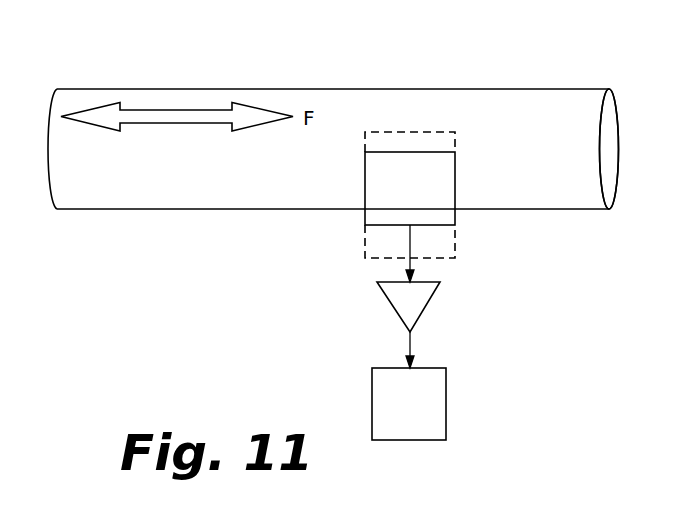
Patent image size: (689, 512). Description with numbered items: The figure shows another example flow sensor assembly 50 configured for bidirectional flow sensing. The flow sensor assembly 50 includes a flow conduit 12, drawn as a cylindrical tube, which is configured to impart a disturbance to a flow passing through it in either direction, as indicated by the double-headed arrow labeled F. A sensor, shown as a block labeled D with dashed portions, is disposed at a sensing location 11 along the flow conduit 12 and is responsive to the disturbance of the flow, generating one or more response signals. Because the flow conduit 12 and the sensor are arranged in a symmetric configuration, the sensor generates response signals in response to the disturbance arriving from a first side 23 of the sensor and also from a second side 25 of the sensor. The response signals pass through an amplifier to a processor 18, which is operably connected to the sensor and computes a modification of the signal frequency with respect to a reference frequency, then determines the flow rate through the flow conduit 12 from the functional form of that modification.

The flow sensor assembly 50 is at (27, 72).
The first side 23 is at (197, 83).
The second side 25 is at (487, 83).
The flow conduit 12 is at (593, 88).
The sensing location 11 is at (408, 131).
The processor 18 is at (396, 415).